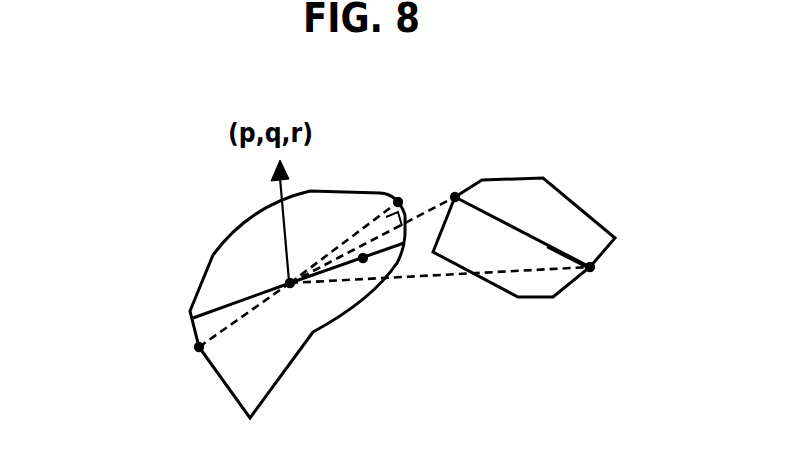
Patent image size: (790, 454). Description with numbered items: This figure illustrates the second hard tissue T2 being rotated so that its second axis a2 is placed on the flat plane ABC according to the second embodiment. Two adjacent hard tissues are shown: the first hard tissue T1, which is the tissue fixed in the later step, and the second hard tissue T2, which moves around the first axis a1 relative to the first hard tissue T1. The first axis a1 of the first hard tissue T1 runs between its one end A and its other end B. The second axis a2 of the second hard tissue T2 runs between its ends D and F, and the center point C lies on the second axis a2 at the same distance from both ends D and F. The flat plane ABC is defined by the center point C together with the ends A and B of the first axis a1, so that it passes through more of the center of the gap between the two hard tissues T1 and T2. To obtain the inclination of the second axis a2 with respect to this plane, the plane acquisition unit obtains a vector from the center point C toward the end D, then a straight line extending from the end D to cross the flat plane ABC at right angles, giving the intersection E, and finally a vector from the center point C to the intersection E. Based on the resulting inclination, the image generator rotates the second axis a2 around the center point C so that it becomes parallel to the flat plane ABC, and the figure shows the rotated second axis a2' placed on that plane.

The end of the first axis A is at (456, 196).
The other end of the first axis B is at (592, 267).
The center point C is at (315, 395).
The end of the second axis D is at (397, 201).
The intersection E is at (363, 258).
The other end of the second axis F is at (199, 347).
The first hard tissue T1 is at (572, 195).
The second hard tissue T2 is at (215, 253).
The first axis a1 is at (548, 245).
The second axis a2 is at (344, 215).
The rotated second axis a2' is at (347, 313).